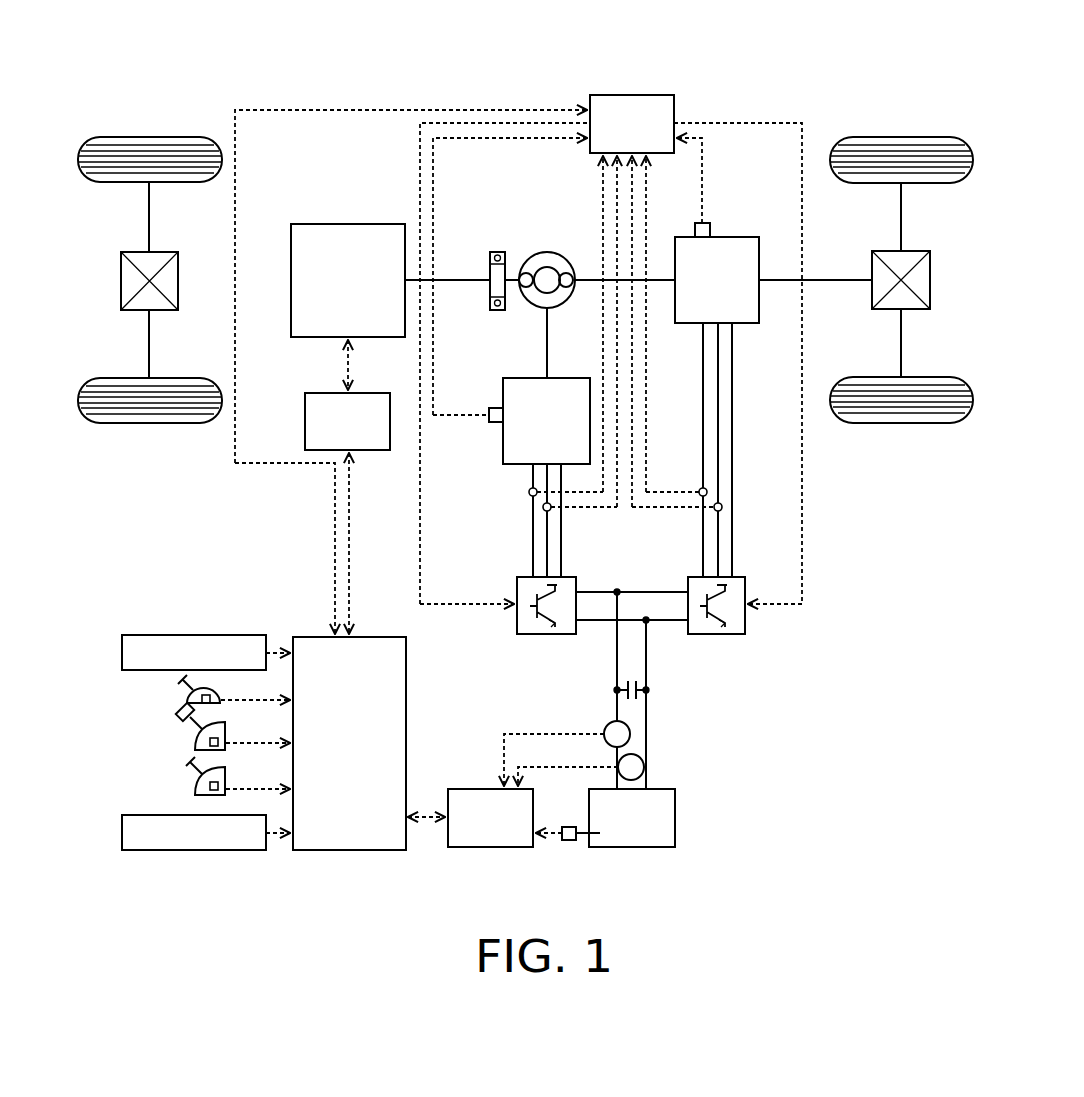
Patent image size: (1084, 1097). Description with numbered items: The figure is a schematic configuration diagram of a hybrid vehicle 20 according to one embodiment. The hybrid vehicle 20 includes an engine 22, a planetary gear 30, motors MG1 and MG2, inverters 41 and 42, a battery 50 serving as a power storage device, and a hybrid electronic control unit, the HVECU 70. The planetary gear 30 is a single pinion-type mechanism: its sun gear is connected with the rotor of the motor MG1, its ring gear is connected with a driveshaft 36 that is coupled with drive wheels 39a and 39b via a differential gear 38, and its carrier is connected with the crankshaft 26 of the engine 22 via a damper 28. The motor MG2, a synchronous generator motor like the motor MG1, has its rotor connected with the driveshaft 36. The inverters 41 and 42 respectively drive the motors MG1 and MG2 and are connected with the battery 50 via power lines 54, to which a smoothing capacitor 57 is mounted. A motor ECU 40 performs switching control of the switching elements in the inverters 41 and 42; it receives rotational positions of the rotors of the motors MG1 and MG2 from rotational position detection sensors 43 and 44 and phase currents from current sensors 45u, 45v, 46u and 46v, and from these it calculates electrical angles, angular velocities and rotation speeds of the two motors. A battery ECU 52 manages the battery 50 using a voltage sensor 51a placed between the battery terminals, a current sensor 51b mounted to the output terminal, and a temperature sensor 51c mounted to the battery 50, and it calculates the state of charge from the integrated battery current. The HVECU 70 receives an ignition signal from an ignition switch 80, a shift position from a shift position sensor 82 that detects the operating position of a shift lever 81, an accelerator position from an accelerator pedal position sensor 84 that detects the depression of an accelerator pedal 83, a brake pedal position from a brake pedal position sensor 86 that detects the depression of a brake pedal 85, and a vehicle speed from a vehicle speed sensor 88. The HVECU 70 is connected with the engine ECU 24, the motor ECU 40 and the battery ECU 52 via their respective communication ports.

The hybrid vehicle 20 is at (745, 66).
The engine 22 is at (375, 223).
The engine ECU 24 is at (376, 392).
The crankshaft 26 is at (455, 278).
The damper 28 is at (497, 251).
The planetary gear 30 is at (548, 252).
The driveshaft 36 is at (845, 278).
The differential gear 38 is at (912, 250).
The drive wheel 39a is at (900, 137).
The drive wheel 39b is at (900, 424).
The motor ECU 40 is at (632, 95).
The inverter 41 is at (570, 577).
The inverter 42 is at (740, 577).
The rotational position detection sensor 43 is at (493, 424).
The rotational position detection sensor 44 is at (699, 222).
The current sensor 45u is at (529, 492).
The current sensor 45v is at (543, 507).
The current sensor 46u is at (707, 492).
The current sensor 46v is at (722, 507).
The battery 50 is at (677, 815).
The voltage sensor 51a is at (645, 767).
The current sensor 51b is at (632, 732).
The temperature sensor 51c is at (570, 842).
The battery ECU 52 is at (477, 788).
The power lines 54 is at (646, 664).
The capacitor 57 is at (650, 684).
The hybrid electronic control unit (HVECU) 70 is at (378, 636).
The ignition switch 80 is at (122, 650).
The shift lever 81 is at (181, 681).
The shift position sensor 82 is at (188, 700).
The accelerator pedal 83 is at (176, 729).
The accelerator pedal position sensor 84 is at (195, 748).
The brake pedal 85 is at (188, 773).
The brake pedal position sensor 86 is at (195, 796).
The vehicle speed sensor 88 is at (122, 829).
The motor MG1 is at (518, 377).
The motor MG2 is at (738, 236).